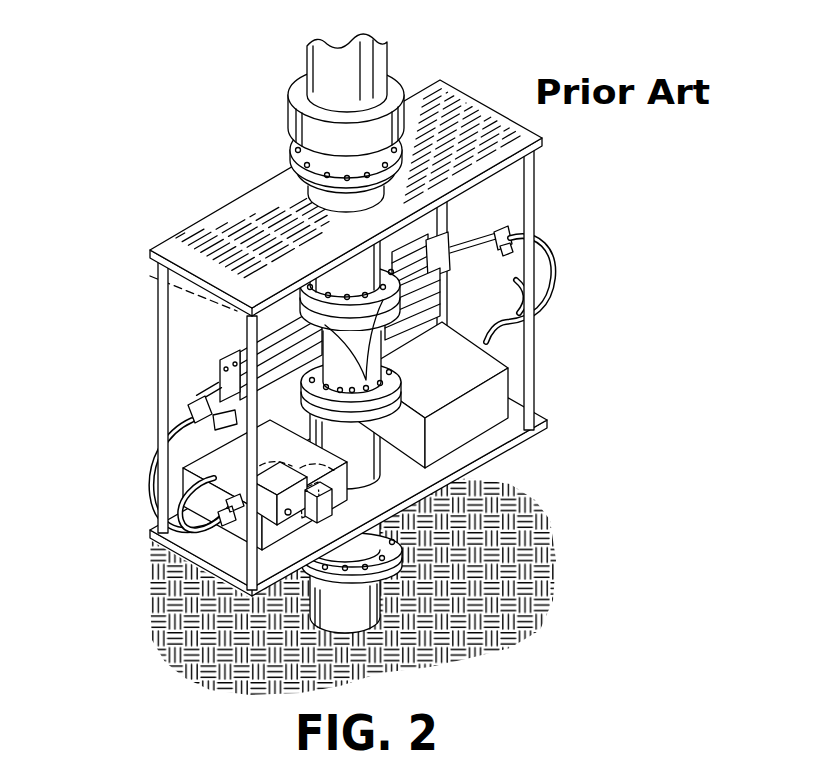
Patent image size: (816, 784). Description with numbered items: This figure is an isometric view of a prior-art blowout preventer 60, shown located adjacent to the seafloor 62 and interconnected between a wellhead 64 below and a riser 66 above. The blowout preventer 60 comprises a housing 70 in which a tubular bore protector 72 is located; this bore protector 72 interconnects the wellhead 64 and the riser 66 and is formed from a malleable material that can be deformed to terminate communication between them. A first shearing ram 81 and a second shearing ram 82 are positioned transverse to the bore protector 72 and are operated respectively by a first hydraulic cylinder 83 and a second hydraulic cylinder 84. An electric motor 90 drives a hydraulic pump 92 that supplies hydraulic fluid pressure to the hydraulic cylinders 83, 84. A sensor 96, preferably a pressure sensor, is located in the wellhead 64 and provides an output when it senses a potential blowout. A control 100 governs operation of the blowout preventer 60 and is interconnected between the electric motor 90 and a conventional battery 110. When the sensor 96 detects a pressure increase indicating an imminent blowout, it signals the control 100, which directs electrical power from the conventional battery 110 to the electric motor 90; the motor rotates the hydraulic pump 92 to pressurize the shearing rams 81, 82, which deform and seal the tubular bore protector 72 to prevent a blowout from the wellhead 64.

The blowout preventer 60 is at (123, 139).
The seafloor 62 is at (545, 565).
The wellhead 64 is at (368, 618).
The riser 66 is at (367, 66).
The housing 70 is at (445, 350).
The tubular bore protector 72 is at (357, 328).
The first shearing ram 81 is at (150, 276).
The second shearing ram 82 is at (460, 283).
The first hydraulic cylinder 83 is at (223, 403).
The second hydraulic cylinder 84 is at (498, 240).
The electric motor 90 is at (277, 522).
The hydraulic pump 92 is at (233, 490).
The sensor 96 is at (475, 481).
The control 100 is at (492, 406).
The conventional battery 110 is at (260, 463).